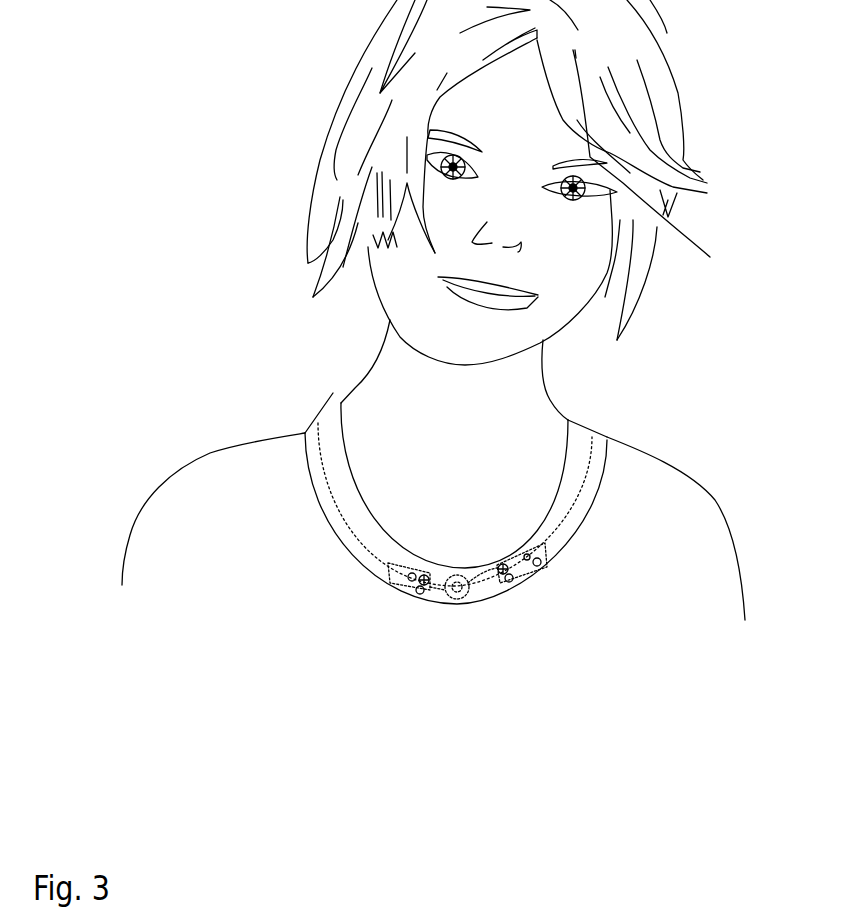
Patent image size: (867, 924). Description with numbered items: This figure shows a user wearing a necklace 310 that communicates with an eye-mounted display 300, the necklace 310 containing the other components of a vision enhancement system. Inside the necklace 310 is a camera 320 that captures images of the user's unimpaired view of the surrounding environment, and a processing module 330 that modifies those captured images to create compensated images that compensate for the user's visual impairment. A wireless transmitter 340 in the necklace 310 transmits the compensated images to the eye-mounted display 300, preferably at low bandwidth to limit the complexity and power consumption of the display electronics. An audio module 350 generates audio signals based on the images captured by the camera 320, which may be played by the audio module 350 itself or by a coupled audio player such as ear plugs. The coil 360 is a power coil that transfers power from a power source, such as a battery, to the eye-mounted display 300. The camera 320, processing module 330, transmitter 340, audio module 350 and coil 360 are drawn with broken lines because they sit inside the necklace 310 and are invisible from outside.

The eye-mounted display 300 is at (573, 197).
The necklace 310 is at (333, 410).
The camera 320 is at (527, 553).
The processing module 330 is at (520, 570).
The wireless transmitter 340 is at (457, 599).
The audio module 350 is at (397, 583).
The coil 360 is at (330, 484).